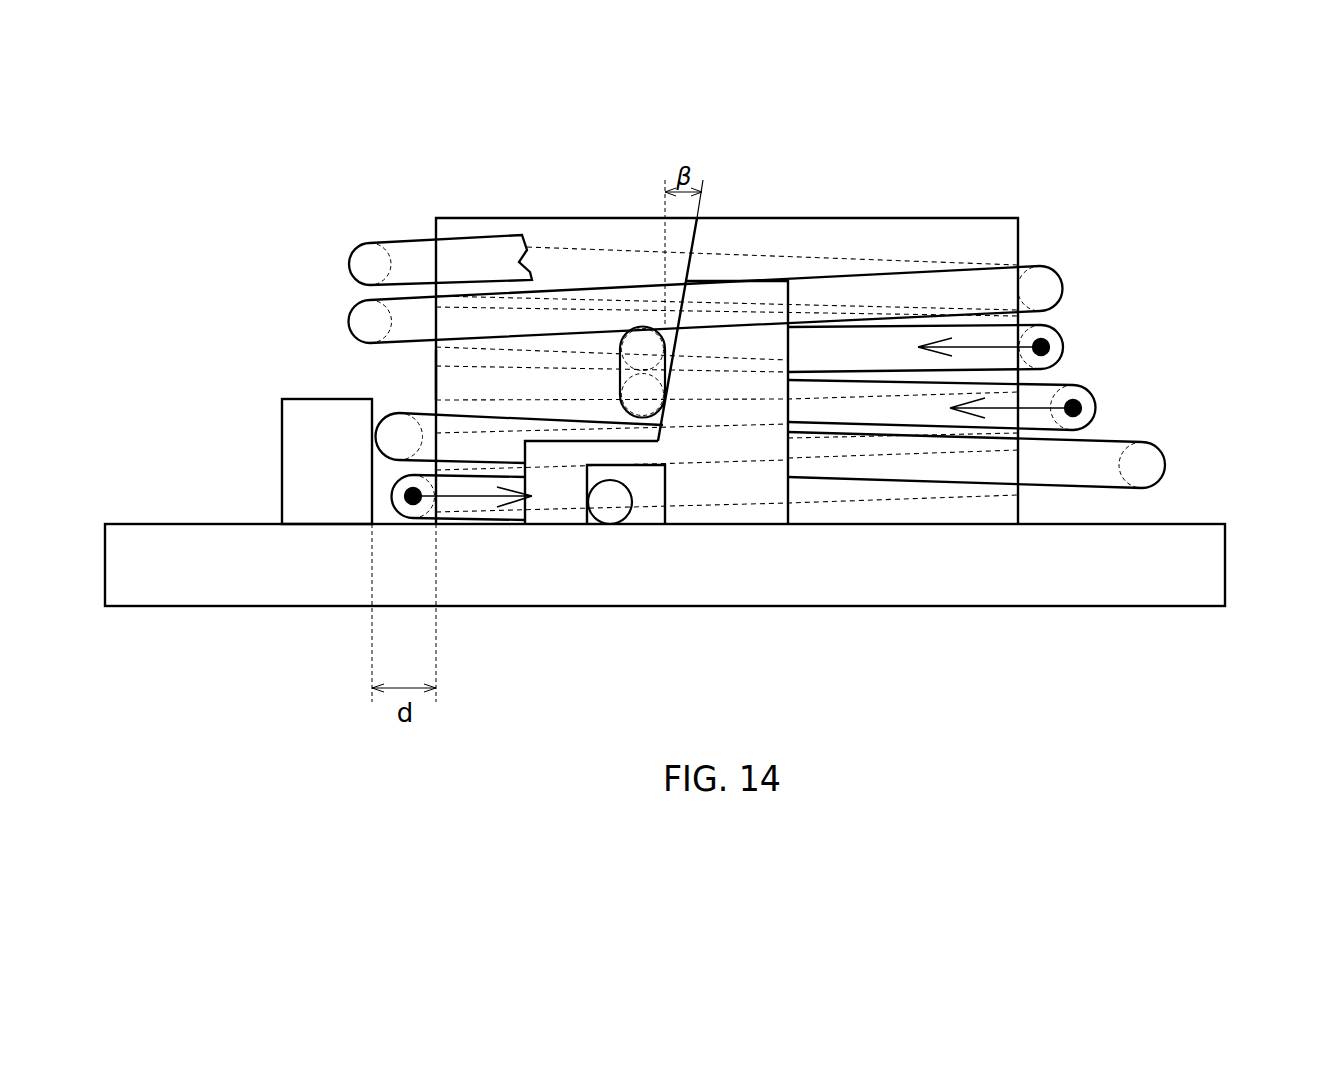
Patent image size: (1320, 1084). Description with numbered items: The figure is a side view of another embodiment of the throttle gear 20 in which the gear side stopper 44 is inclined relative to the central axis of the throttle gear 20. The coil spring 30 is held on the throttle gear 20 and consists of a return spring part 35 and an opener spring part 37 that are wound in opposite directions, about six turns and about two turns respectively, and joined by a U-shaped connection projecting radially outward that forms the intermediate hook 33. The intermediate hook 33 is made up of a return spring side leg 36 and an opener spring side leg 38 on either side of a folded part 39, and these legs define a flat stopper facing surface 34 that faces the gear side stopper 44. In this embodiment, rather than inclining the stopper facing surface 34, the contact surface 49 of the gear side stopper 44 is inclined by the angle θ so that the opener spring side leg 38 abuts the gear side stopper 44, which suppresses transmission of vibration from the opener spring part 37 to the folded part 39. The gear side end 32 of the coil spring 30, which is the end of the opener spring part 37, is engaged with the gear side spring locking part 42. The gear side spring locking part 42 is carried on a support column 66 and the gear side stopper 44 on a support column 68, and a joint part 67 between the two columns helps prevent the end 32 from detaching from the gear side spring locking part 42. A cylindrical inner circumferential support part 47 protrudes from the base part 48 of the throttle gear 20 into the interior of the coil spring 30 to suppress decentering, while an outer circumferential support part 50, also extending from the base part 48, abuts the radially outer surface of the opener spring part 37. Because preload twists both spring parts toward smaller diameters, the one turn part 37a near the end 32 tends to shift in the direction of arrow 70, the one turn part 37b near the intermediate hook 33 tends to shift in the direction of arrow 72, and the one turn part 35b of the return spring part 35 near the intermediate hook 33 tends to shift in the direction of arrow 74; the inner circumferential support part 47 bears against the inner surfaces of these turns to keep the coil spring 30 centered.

The throttle gear 20 is at (956, 608).
The coil spring 30 is at (356, 247).
The end 32 is at (614, 508).
The intermediate hook 33 is at (612, 368).
The stopper facing surface 34 is at (675, 378).
The return spring part 35 is at (1042, 290).
The one turn part 35b is at (1050, 342).
The return spring side leg 36 is at (642, 338).
The opener spring part 37 is at (393, 437).
The one turn part 37a is at (1142, 470).
The one turn part 37b is at (1078, 403).
The opener spring side leg 38 is at (642, 400).
The folded part 39 is at (622, 364).
The gear side spring locking part 42 is at (605, 503).
The gear side stopper 44 is at (680, 386).
The inner circumferential support part 47 is at (434, 370).
The base part 48 is at (765, 578).
The contact surface 49 is at (660, 322).
The outer circumferential support part 50 is at (303, 465).
The support column 66 is at (555, 497).
The joint part 67 is at (600, 457).
The support column 68 is at (723, 487).
The arrow 70 is at (476, 497).
The arrow 72 is at (1037, 410).
The arrow 74 is at (988, 345).